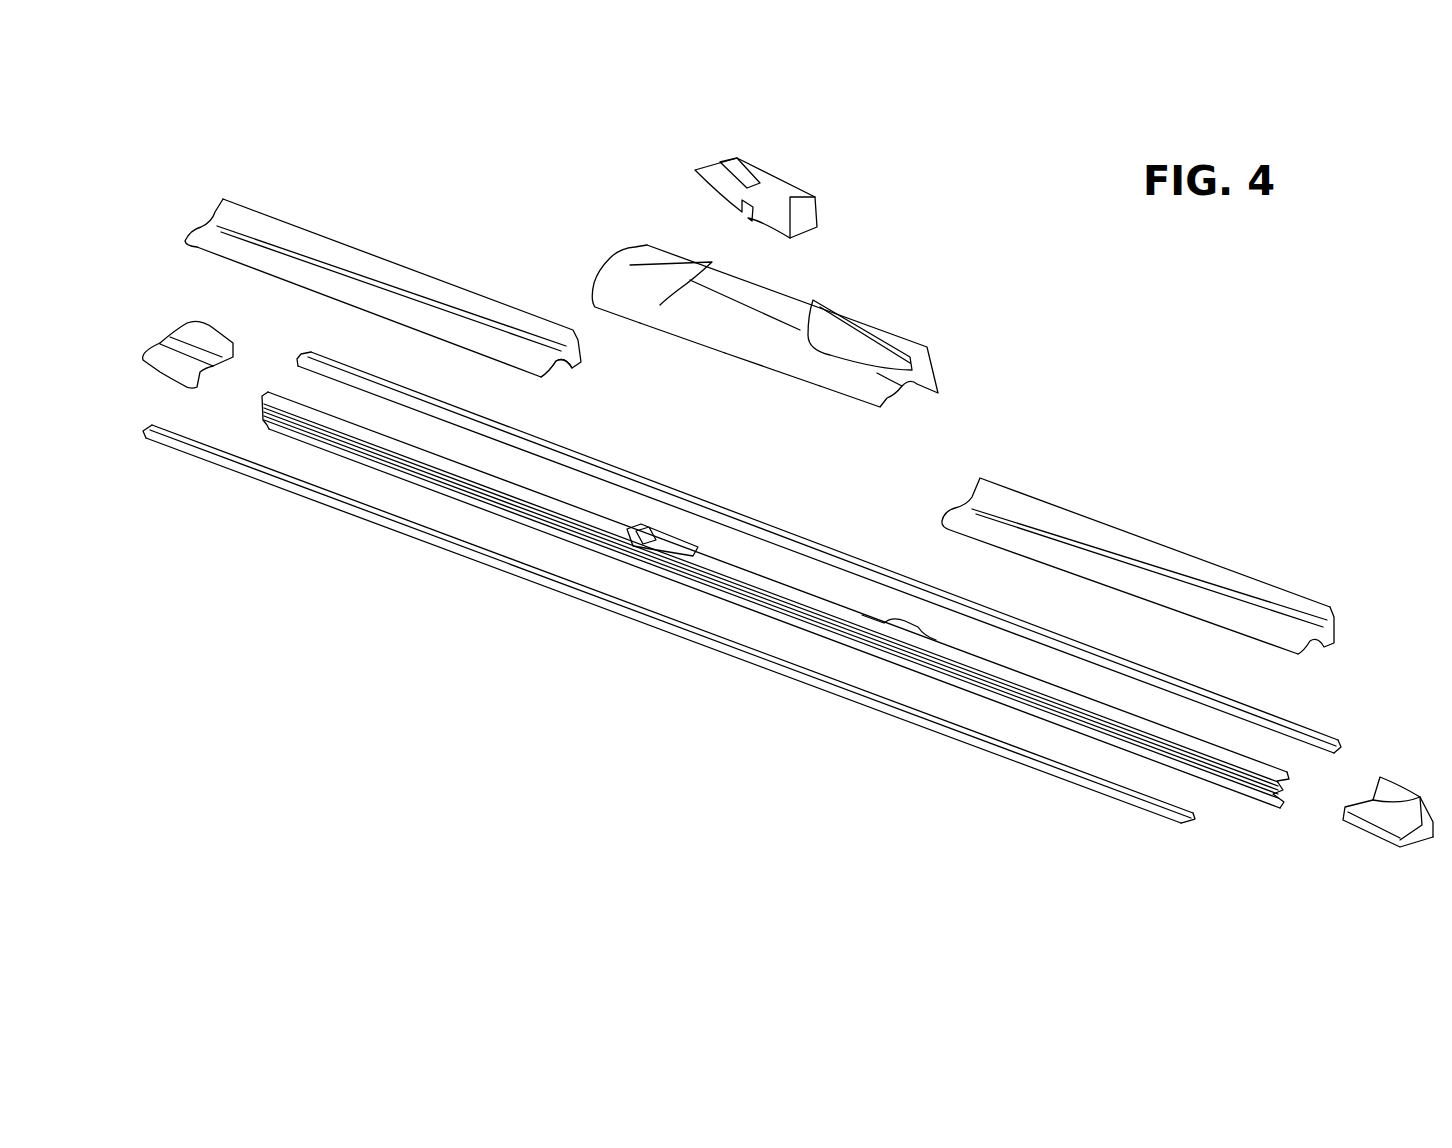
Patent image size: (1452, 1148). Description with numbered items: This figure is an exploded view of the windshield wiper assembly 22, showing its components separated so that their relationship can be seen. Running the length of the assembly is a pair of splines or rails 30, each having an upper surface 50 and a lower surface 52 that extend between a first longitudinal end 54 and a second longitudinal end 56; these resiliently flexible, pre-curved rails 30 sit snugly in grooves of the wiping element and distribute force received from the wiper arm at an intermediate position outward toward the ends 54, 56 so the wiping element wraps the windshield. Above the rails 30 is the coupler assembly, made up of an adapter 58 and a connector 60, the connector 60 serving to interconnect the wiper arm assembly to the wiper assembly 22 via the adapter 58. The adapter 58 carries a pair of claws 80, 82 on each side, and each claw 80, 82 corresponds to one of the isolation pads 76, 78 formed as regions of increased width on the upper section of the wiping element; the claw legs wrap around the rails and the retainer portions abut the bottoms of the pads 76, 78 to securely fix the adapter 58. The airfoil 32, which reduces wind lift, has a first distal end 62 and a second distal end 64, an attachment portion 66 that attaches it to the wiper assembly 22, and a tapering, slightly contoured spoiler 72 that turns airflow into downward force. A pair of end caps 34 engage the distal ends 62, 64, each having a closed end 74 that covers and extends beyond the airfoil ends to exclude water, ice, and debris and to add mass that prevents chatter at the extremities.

The wiper assembly 22 is at (461, 165).
The rails 30 is at (1287, 720).
The airfoil 32 is at (368, 244).
The end caps 34 is at (187, 342).
The upper surface 50 is at (630, 602).
The lower surface 52 is at (768, 665).
The first longitudinal end 54 is at (300, 357).
The second longitudinal end 56 is at (1350, 747).
The adapter 58 is at (913, 333).
The connector 60 is at (785, 173).
The first distal end 62 is at (198, 230).
The second distal end 64 is at (1335, 643).
The attachment portion 66 is at (553, 374).
The spoiler 72 is at (443, 278).
The closed end 74 is at (143, 355).
The isolation pad 76 is at (665, 540).
The isolation pad 78 is at (898, 629).
The claw 80 is at (684, 330).
The claw 82 is at (775, 367).